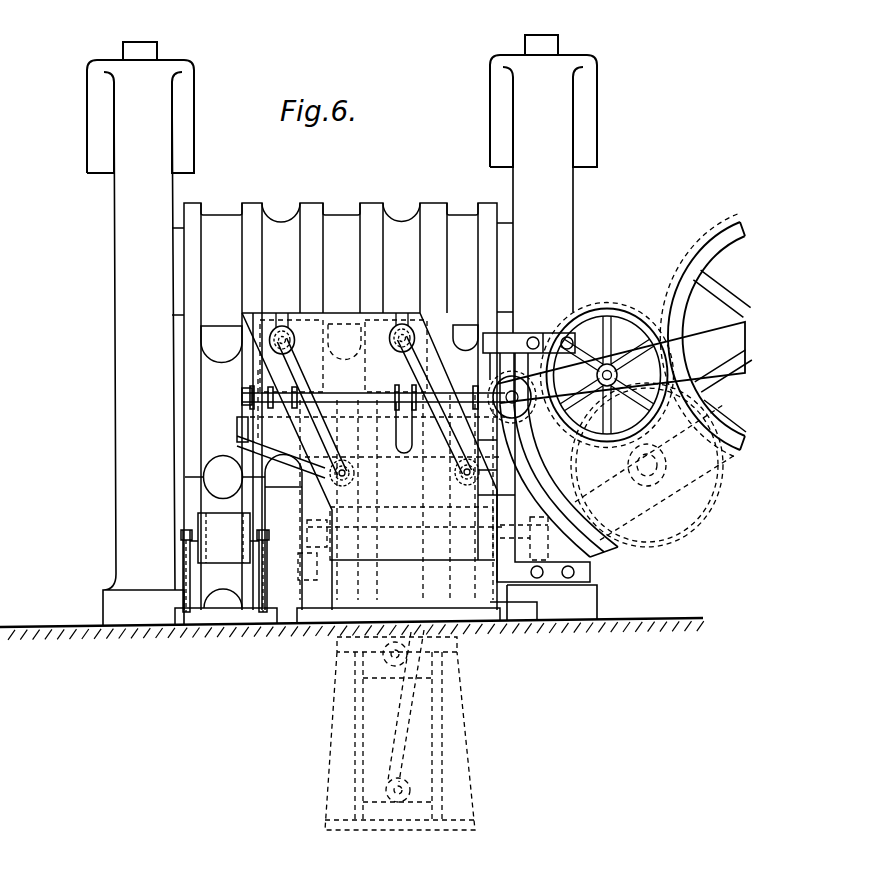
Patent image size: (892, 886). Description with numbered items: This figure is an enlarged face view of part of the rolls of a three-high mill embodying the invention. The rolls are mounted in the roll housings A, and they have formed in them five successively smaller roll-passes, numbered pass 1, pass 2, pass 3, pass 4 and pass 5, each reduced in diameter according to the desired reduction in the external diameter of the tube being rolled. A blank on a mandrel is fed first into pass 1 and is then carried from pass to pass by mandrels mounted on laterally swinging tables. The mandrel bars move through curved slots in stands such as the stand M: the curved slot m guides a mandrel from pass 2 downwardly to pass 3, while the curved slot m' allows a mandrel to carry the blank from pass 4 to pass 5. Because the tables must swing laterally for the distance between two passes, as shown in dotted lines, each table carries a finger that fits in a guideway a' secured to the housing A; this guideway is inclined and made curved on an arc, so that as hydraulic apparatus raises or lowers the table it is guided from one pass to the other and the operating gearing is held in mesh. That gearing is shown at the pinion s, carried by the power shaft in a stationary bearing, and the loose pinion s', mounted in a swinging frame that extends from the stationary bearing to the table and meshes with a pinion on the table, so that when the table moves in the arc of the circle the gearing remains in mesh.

The roll housings A is at (117, 263).
The roll-pass 1 is at (225, 534).
The curved slot m is at (282, 320).
The curved slot m' is at (402, 319).
The roll-pass 2 is at (291, 356).
The roll-pass 4 is at (396, 355).
The stand M is at (374, 405).
The roll-pass 3 is at (343, 464).
The roll-pass 5 is at (458, 475).
The loose pinion s' is at (607, 363).
The guideway a' is at (559, 481).
The pinion s is at (706, 336).